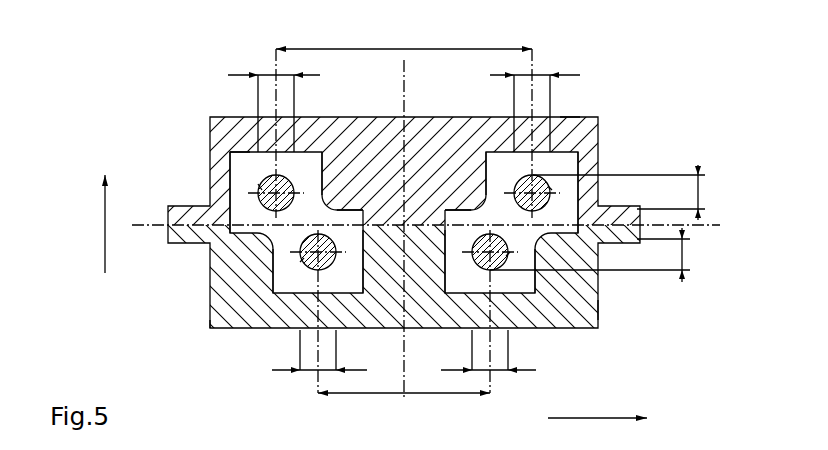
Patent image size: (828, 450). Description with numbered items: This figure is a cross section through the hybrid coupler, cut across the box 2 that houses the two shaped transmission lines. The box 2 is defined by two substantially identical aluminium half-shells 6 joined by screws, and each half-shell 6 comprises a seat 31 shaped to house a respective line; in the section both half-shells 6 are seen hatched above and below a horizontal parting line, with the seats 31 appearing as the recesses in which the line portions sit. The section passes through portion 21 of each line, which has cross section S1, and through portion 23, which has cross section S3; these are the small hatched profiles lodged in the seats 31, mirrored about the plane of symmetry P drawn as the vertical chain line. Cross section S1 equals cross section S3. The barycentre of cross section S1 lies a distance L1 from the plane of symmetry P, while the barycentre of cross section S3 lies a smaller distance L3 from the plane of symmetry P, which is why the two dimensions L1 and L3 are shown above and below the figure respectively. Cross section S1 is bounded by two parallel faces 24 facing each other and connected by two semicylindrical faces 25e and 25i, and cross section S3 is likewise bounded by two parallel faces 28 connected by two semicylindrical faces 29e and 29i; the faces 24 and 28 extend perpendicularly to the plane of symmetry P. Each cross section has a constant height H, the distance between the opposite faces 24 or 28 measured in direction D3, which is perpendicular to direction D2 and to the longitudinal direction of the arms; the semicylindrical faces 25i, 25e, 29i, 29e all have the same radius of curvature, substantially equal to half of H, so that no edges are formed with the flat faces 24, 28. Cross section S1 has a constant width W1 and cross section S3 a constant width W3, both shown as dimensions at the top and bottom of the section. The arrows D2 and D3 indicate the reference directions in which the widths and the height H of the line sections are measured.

The box 2 is at (592, 108).
The half-shell 6 is at (576, 117).
The portion 21 is at (262, 176).
The portion 23 is at (308, 266).
The parallel faces 24 is at (266, 176).
The semicylindrical face 25i is at (323, 165).
The semicylindrical face 25e is at (232, 236).
The parallel faces 28 is at (368, 160).
The semicylindrical face 29i is at (362, 294).
The semicylindrical face 29e is at (270, 292).
The seat 31 is at (250, 203).
The cross section S1 is at (258, 184).
The cross section S3 is at (300, 262).
The distance L1 is at (360, 48).
The distance L3 is at (356, 393).
The width W1 is at (266, 72).
The width W3 is at (307, 370).
The height H is at (698, 195).
The plane of symmetry P is at (419, 63).
The direction D2 is at (580, 417).
The direction D3 is at (104, 254).